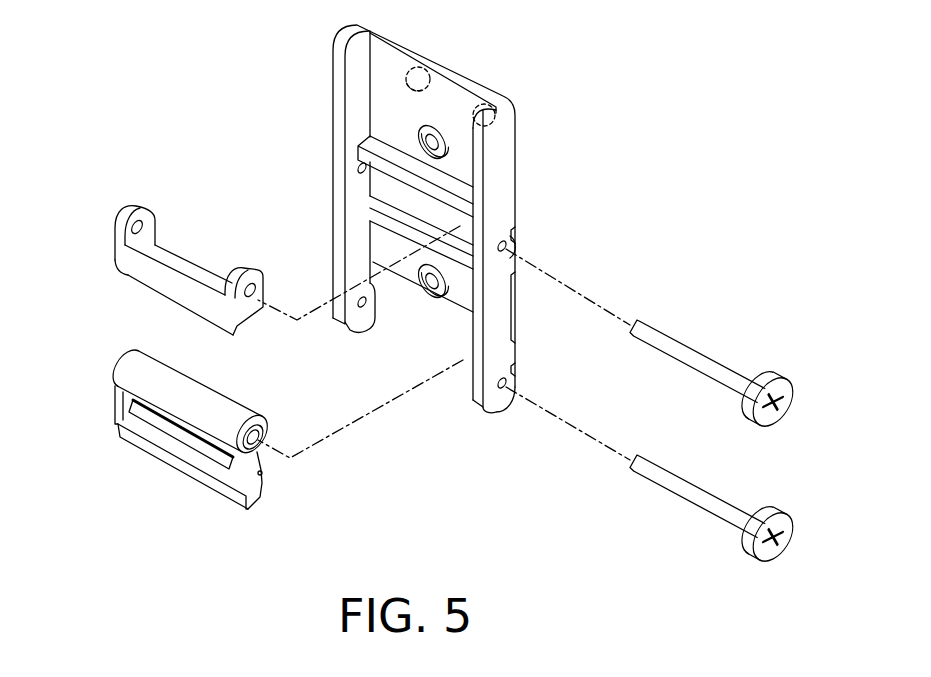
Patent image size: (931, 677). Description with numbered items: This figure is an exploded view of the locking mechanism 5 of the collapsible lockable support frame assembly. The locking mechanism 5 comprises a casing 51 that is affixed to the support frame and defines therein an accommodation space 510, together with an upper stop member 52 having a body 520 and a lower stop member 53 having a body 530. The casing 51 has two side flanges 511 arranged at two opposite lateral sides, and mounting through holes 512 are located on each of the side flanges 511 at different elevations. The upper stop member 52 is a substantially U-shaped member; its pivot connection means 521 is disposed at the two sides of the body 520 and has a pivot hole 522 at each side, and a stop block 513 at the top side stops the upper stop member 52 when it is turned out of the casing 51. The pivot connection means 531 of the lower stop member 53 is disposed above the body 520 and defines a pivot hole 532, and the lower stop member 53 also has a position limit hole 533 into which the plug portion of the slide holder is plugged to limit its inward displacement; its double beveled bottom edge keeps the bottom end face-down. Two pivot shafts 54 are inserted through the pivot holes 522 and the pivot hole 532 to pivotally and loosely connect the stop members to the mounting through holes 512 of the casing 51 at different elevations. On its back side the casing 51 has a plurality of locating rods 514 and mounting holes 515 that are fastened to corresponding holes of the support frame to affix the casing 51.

The locking mechanism 5 is at (424, 287).
The casing 51 is at (444, 233).
The accommodation space 510 is at (405, 325).
The side flanges 511 is at (355, 100).
The mounting through holes 512 is at (358, 168).
The stop block 513 is at (420, 172).
The locating rods 514 is at (427, 72).
The mounting holes 515 is at (434, 143).
The upper stop member 52 is at (183, 257).
The body 520 is at (170, 283).
The pivot connection means 521 is at (134, 208).
The pivot hole 522 is at (278, 283).
The lower stop member 53 is at (200, 445).
The body 530 is at (157, 458).
The pivot connection means 531 is at (200, 402).
The pivot hole 532 is at (256, 438).
The position limit hole 533 is at (197, 445).
The pivot shafts 54 is at (702, 358).